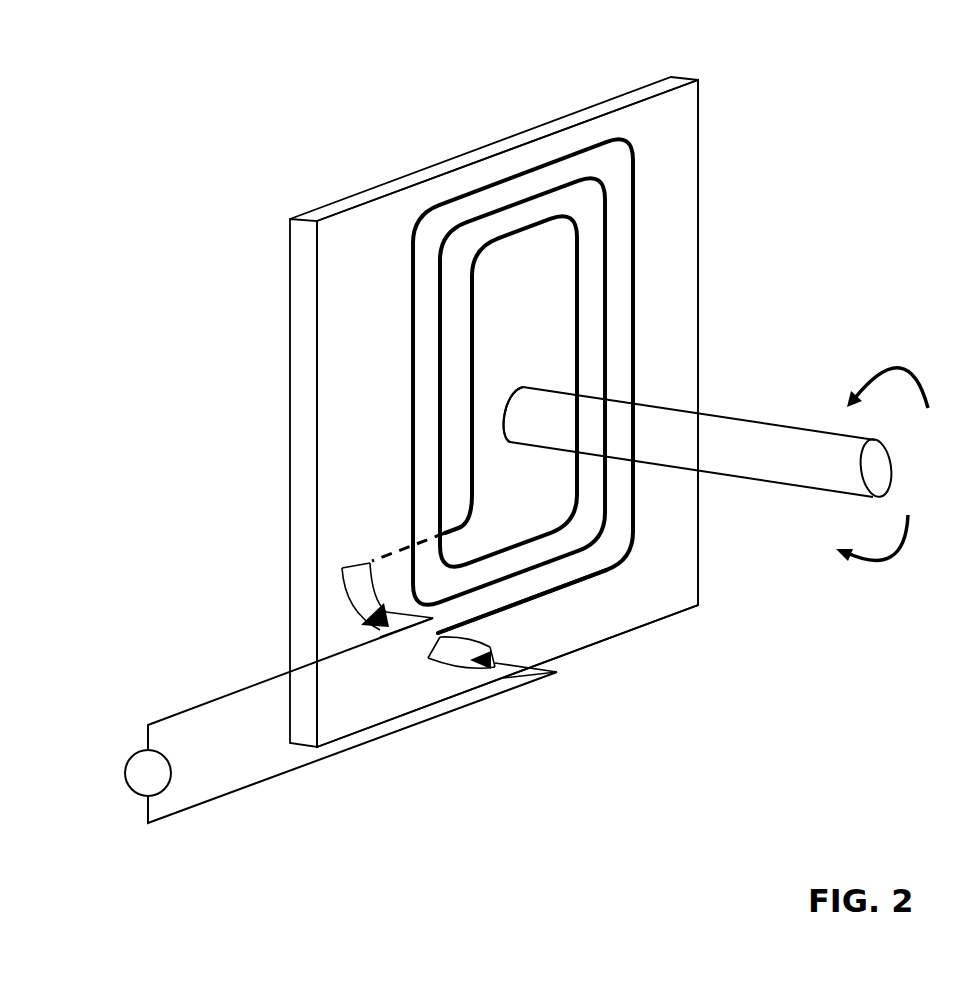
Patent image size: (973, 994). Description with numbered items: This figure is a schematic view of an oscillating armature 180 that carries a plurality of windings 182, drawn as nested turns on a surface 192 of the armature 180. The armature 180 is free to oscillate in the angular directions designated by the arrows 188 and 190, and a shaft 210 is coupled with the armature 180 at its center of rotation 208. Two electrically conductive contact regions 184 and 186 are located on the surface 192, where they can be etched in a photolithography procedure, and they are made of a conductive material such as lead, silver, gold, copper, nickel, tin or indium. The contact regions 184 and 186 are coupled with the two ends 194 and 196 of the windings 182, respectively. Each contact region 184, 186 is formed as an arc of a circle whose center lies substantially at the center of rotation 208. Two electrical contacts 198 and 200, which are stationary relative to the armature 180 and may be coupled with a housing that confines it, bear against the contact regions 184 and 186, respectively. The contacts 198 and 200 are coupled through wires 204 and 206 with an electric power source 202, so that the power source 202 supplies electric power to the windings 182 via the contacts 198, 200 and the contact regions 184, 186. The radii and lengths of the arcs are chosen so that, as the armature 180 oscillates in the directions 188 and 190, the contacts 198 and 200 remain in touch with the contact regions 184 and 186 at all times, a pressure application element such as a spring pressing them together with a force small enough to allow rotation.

The armature 180 is at (685, 74).
The windings 182 is at (523, 172).
The electrically conductive contact region 184 is at (345, 580).
The electrically conductive contact region 186 is at (442, 660).
The arrow 188 is at (897, 362).
The arrow 190 is at (862, 565).
The surface 192 is at (638, 597).
The end of windings 194 is at (378, 553).
The end of windings 196 is at (487, 618).
The electrical contact 198 is at (362, 623).
The electrical contact 200 is at (483, 668).
The electric power source 202 is at (125, 772).
The wire 204 is at (183, 710).
The wire 206 is at (237, 793).
The center of rotation 208 is at (522, 415).
The shaft 210 is at (757, 421).